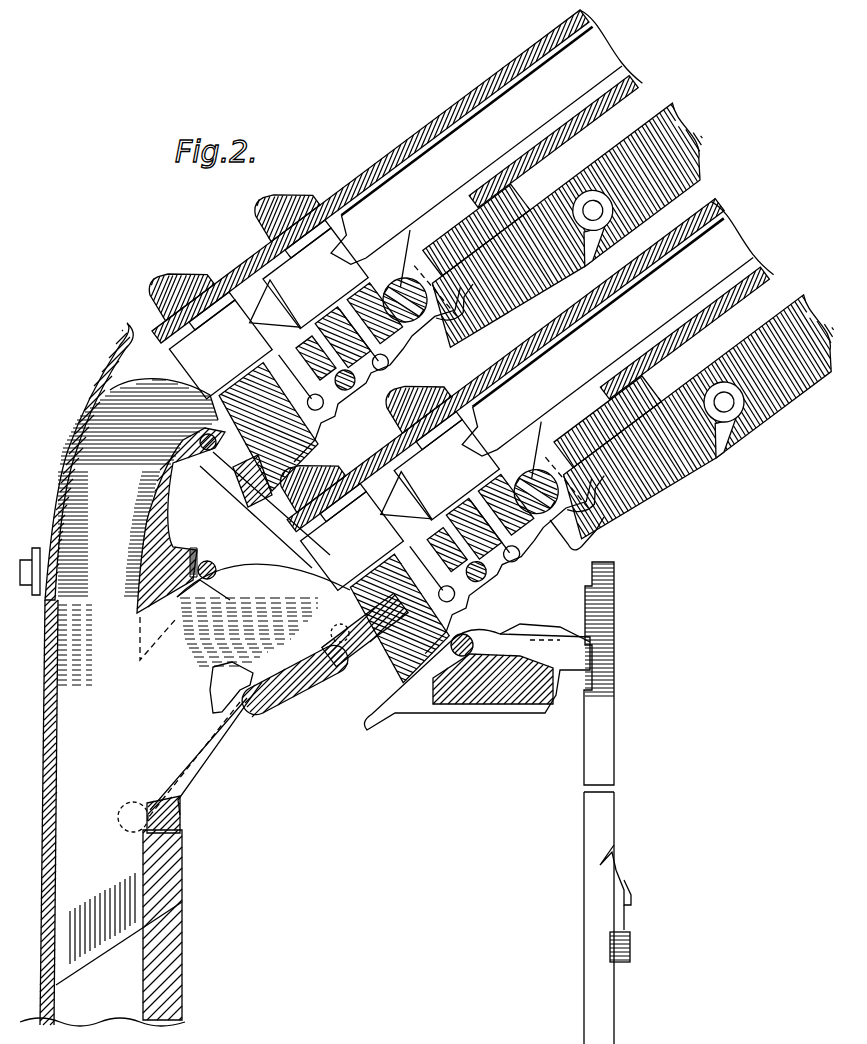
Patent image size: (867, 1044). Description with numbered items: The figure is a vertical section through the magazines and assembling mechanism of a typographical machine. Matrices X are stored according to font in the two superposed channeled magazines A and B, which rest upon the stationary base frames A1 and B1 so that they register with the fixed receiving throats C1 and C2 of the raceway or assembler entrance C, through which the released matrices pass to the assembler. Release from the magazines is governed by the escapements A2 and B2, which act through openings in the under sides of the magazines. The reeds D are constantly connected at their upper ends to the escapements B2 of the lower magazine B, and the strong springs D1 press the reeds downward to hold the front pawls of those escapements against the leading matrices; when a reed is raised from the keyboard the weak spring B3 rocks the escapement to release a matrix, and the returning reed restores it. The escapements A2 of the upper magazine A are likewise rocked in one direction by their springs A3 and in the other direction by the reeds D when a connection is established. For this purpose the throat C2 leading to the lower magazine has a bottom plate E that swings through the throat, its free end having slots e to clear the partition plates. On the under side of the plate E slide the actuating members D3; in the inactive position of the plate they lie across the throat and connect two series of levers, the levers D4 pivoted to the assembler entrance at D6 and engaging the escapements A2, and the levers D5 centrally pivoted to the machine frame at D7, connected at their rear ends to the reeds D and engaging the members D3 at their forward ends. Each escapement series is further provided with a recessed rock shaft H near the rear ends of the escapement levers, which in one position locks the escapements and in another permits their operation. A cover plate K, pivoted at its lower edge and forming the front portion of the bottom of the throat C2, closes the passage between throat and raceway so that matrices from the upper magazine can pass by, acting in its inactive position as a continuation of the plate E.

The upper magazine A is at (397, 207).
The stationary base frame A1 is at (680, 130).
The escapement A2 is at (322, 395).
The spring A3 is at (452, 320).
The lower magazine B is at (530, 397).
The stationary base frame B1 is at (705, 470).
The escapement B2 is at (512, 577).
The weak spring B3 is at (565, 512).
The raceway or assembler entrance C is at (44, 660).
The fixed receiving throat C1 is at (118, 380).
The fixed receiving throat C2 is at (263, 615).
The reed D is at (612, 765).
The spring D1 is at (634, 1002).
The actuating member D3 is at (290, 690).
The actuating lever D4 is at (242, 540).
The actuating lever D5 is at (424, 692).
The pivot D6 is at (208, 580).
The pivot D7 is at (466, 636).
The bottom plate E is at (345, 660).
The rock shaft H is at (470, 341).
The cover plate K is at (200, 742).
The matrix X is at (329, 404).
The slot e is at (245, 672).